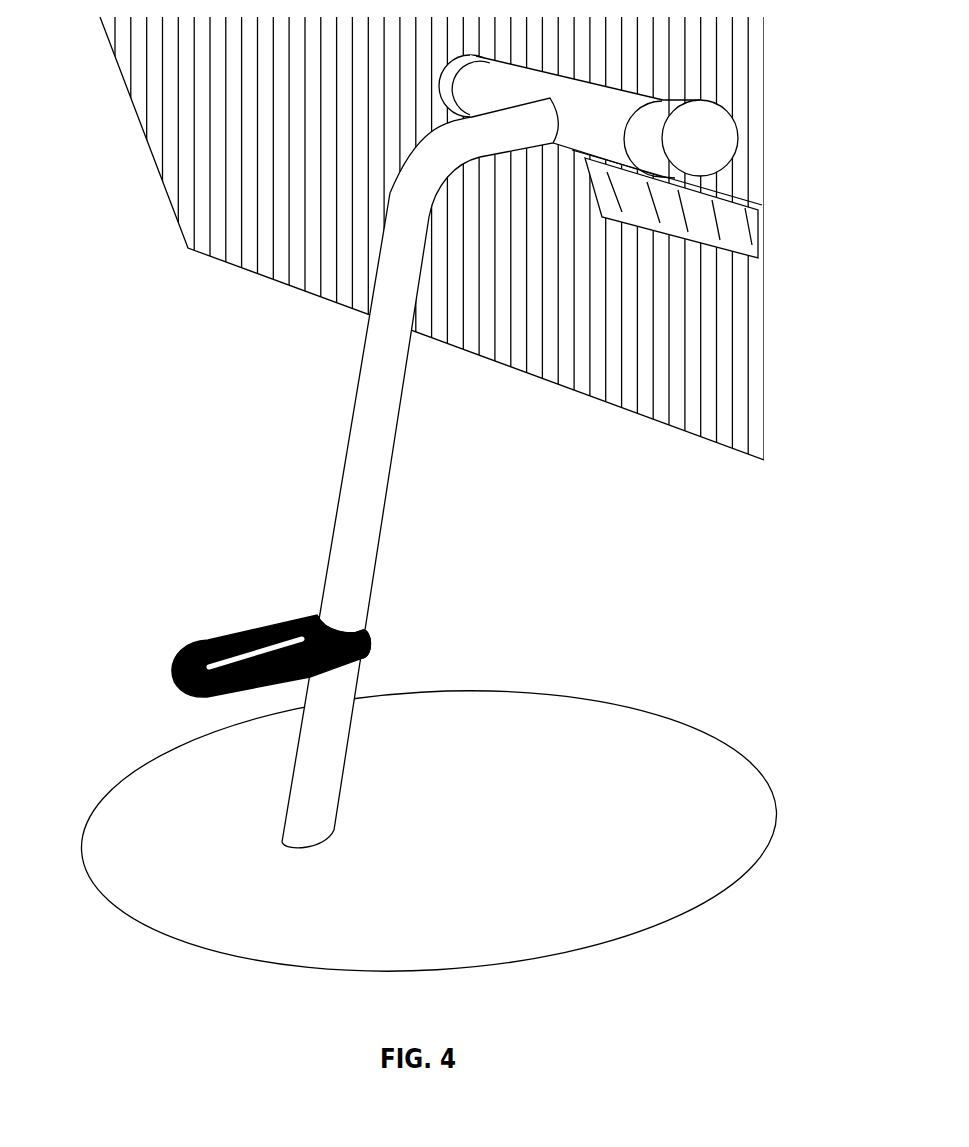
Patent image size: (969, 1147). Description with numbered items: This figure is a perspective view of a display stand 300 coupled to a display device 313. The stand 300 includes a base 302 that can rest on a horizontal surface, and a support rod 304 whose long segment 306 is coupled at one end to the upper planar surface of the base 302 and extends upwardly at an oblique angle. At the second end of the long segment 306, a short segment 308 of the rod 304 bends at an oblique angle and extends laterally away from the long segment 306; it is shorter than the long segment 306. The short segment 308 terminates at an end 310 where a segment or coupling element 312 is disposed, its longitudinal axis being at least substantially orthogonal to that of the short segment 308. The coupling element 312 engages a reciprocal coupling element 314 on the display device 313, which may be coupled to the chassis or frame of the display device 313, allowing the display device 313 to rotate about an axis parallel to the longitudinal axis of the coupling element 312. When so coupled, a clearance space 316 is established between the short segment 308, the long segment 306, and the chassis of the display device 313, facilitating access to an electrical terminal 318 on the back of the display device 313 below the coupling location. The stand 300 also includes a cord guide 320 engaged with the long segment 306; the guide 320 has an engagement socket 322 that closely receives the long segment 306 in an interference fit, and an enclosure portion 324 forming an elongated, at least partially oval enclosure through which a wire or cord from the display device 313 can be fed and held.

The display stand 300 is at (456, 507).
The base 302 is at (642, 710).
The support rod 304 is at (396, 465).
The long segment 306 is at (420, 465).
The short segment 308 is at (436, 132).
The end 310 is at (606, 101).
The coupling element 312 is at (607, 76).
The display device 313 is at (630, 412).
The reciprocal coupling element 314 is at (463, 55).
The clearance space 316 is at (623, 230).
The electrical terminal 318 is at (762, 224).
The cord guide 320 is at (284, 643).
The engagement socket 322 is at (368, 617).
The enclosure portion 324 is at (218, 665).